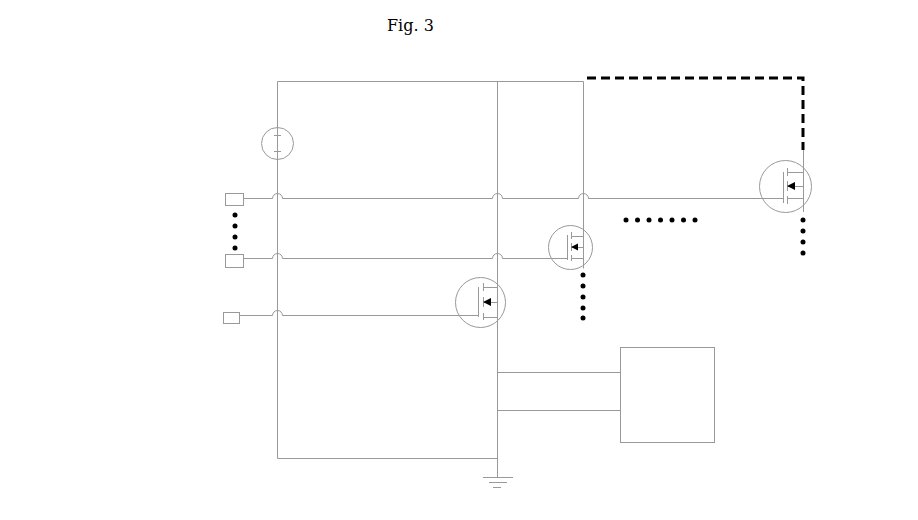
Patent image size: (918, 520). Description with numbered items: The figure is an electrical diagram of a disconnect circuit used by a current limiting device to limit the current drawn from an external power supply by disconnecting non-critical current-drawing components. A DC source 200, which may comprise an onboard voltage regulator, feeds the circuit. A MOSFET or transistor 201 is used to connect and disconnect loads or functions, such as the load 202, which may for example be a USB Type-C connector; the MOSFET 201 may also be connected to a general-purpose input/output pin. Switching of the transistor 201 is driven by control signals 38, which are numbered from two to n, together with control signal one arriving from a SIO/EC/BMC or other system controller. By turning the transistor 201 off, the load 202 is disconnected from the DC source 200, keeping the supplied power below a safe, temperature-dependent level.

The DC source 200 is at (227, 134).
The control signals 38 is at (142, 234).
The MOSFET or transistor 201 is at (557, 306).
The load 202 is at (662, 437).